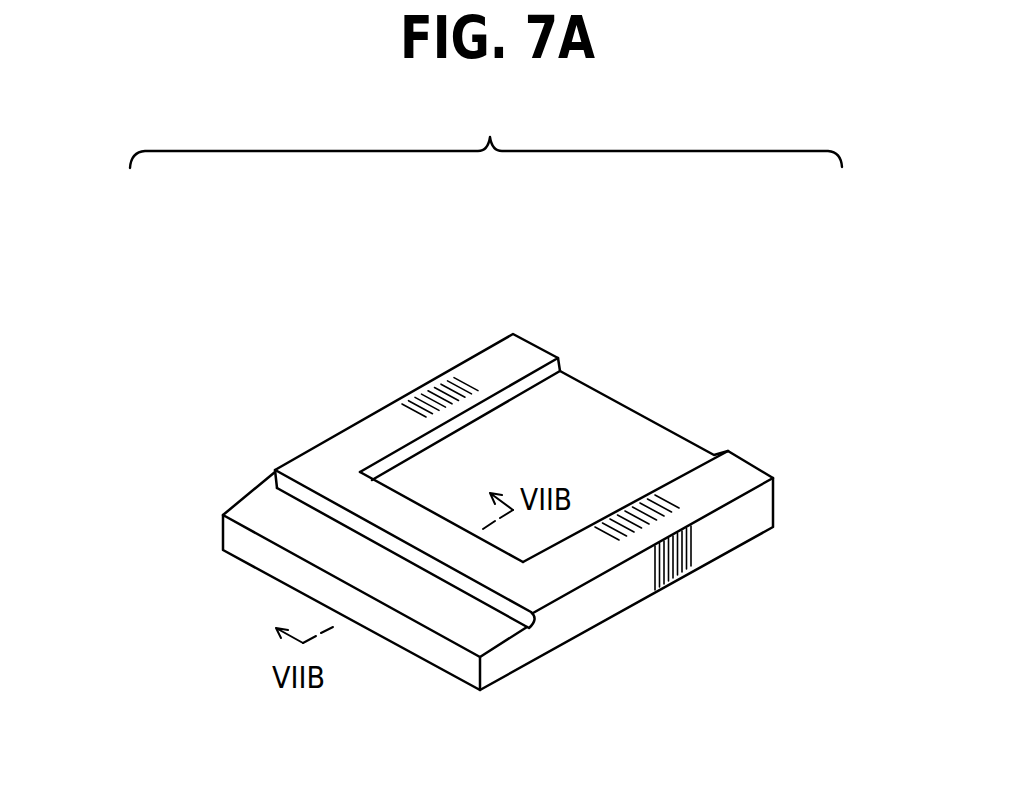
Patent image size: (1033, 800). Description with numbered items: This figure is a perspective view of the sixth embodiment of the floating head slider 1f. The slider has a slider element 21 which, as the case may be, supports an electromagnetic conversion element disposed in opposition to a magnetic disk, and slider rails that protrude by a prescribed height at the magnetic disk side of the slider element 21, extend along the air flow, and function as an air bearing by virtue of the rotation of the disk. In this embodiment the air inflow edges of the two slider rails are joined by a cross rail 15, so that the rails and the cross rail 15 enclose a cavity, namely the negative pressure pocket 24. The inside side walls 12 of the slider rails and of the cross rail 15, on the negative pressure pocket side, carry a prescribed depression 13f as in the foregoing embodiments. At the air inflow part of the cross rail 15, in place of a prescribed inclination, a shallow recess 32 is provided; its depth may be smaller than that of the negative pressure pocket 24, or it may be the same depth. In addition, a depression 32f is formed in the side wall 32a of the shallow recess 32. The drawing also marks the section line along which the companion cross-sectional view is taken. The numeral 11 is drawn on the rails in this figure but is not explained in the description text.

The floating head slider 1f is at (508, 127).
The external electrode 11 is at (528, 350).
The inside side wall 12 is at (560, 366).
The depression 13f is at (489, 403).
The cross rail 15 is at (461, 551).
The slider element 21 is at (648, 437).
The negative pressure pocket 24 is at (550, 528).
The shallow recess 32 is at (250, 497).
The side wall of the shallow recess 32a is at (337, 515).
The depression 32f is at (293, 498).